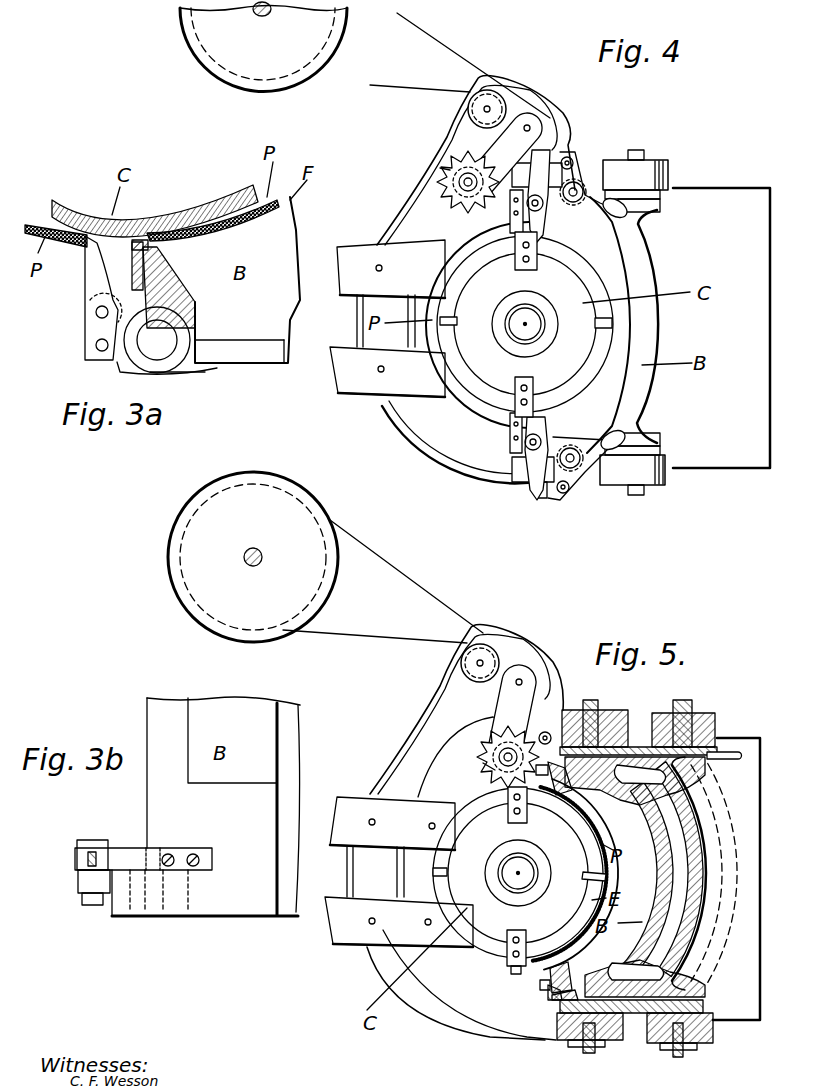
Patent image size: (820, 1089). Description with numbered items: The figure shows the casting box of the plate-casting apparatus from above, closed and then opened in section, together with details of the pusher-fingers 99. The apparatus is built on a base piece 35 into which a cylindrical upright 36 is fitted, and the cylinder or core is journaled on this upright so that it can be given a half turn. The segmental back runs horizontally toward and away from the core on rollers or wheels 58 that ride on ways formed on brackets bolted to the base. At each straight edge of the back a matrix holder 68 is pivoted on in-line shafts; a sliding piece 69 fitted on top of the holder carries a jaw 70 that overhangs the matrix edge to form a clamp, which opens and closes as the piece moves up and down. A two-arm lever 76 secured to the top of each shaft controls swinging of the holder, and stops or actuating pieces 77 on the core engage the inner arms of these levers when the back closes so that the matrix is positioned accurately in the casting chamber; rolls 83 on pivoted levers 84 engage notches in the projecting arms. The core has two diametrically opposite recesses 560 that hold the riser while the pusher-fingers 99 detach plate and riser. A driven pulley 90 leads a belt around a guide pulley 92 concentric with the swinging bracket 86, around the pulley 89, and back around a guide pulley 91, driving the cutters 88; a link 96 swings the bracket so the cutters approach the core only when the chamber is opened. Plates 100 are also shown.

In FIG. 4, the base piece 35 is at (462, 442).
In FIG. 5, the base piece 35 is at (420, 1010).
In FIG. 5, the cylindrical upright 36 is at (505, 878).
In FIG. 4, the rollers or wheels 58 is at (633, 173).
In FIG. 5, the rollers or wheels 58 is at (653, 713).
In FIG. 3A, the matrix holder 68 is at (185, 318).
In FIG. 5, the matrix holder 68 is at (555, 1000).
In FIG. 3A, the sliding piece 69 is at (132, 272).
In FIG. 5, the sliding piece 69 is at (547, 1000).
In FIG. 3A, the jaw 70 is at (143, 238).
In FIG. 5, the jaw 70 is at (558, 800).
In FIG. 4, the two-arm lever 76 is at (557, 157).
In FIG. 4, the stops or actuating pieces 77 is at (522, 252).
In FIG. 5, the stops or actuating pieces 77 is at (510, 810).
In FIG. 4, the rolls 83 is at (573, 173).
In FIG. 4, the levers 84 is at (630, 222).
In FIG. 4, the swinging bracket 86 is at (504, 154).
In FIG. 5, the swinging bracket 86 is at (513, 704).
In FIG. 4, the cutters 88 is at (456, 206).
In FIG. 5, the cutters 88 is at (490, 738).
In FIG. 4, the pulley 89 is at (450, 170).
In FIG. 5, the pulley 89 is at (483, 763).
In FIG. 4, the pulley 90 is at (230, 80).
In FIG. 5, the pulley 90 is at (175, 592).
In FIG. 4, the guide pulley 91 is at (468, 108).
In FIG. 5, the guide pulley 91 is at (460, 663).
In FIG. 4, the guide pulley 92 is at (530, 125).
In FIG. 5, the guide pulley 92 is at (527, 687).
In FIG. 5, the link 96 is at (725, 755).
In FIG. 3A, the pusher-fingers 99 is at (90, 280).
In FIG. 3B, the pusher-fingers 99 is at (75, 862).
In FIG. 4, the pusher-fingers 99 is at (510, 235).
In FIG. 5, the pusher-fingers 99 is at (557, 790).
In FIG. 4, the plate 100 is at (352, 260).
In FIG. 5, the plate 100 is at (350, 800).
In FIG. 4, the recesses or holes 560 is at (447, 328).
In FIG. 5, the recesses or holes 560 is at (438, 873).